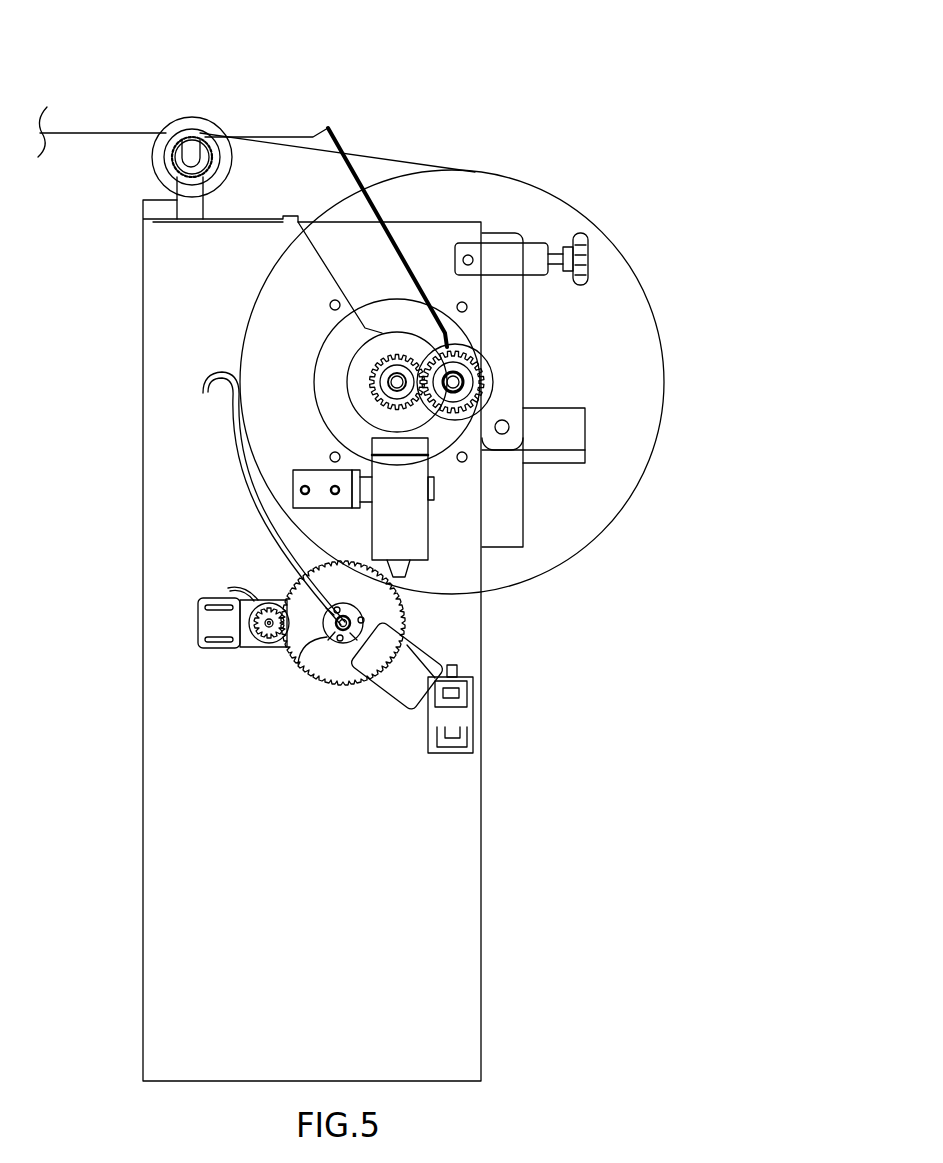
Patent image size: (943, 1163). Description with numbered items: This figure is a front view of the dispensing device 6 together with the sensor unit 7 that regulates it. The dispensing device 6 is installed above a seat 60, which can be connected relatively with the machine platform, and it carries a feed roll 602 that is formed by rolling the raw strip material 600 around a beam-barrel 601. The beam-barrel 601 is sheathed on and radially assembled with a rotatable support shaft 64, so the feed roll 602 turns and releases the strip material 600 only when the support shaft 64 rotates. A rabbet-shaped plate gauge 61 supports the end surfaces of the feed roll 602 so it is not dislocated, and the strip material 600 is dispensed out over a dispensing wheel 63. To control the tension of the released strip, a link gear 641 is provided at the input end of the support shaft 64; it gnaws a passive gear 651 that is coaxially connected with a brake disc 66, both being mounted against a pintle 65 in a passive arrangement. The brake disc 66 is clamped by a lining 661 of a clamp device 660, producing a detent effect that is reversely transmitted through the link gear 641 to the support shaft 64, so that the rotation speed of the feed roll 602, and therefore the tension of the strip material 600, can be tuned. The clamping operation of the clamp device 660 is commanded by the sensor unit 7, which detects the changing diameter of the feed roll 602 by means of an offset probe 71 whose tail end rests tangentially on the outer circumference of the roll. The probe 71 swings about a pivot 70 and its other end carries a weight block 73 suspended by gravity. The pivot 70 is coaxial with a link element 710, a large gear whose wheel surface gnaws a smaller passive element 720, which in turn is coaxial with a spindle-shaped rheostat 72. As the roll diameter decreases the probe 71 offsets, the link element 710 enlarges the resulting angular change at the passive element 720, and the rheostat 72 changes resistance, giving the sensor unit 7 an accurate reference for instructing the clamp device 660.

The dispensing device 6 is at (533, 112).
The seat 60 is at (482, 827).
The strip material 600 is at (107, 130).
The beam-barrel 601 is at (498, 354).
The feed roll 602 is at (556, 190).
The plate gauge 61 is at (362, 150).
The dispensing wheel 63 is at (183, 118).
The support shaft 64 is at (480, 383).
The link gear 641 is at (470, 382).
The pintle 65 is at (396, 381).
The passive gear 651 is at (408, 396).
The brake disc 66 is at (313, 368).
The clamp device 660 is at (412, 528).
The lining 661 is at (380, 445).
The sensor unit 7 is at (186, 656).
The pivot 70 is at (327, 630).
The probe 71 is at (235, 470).
The link element 710 is at (327, 687).
The rheostat 72 is at (246, 624).
The passive element 720 is at (262, 632).
The weight block 73 is at (402, 690).